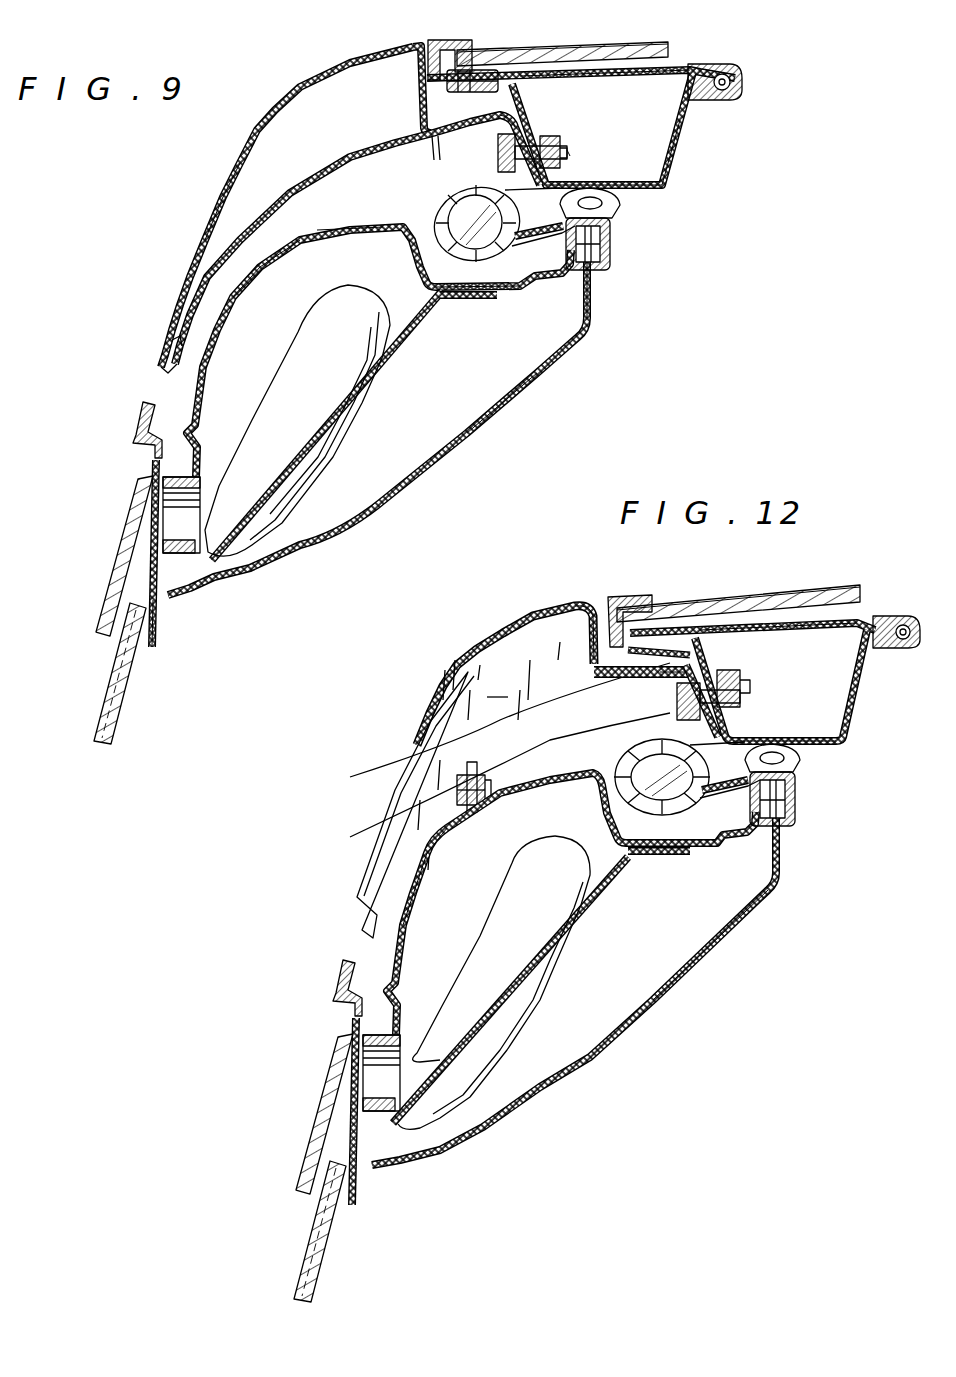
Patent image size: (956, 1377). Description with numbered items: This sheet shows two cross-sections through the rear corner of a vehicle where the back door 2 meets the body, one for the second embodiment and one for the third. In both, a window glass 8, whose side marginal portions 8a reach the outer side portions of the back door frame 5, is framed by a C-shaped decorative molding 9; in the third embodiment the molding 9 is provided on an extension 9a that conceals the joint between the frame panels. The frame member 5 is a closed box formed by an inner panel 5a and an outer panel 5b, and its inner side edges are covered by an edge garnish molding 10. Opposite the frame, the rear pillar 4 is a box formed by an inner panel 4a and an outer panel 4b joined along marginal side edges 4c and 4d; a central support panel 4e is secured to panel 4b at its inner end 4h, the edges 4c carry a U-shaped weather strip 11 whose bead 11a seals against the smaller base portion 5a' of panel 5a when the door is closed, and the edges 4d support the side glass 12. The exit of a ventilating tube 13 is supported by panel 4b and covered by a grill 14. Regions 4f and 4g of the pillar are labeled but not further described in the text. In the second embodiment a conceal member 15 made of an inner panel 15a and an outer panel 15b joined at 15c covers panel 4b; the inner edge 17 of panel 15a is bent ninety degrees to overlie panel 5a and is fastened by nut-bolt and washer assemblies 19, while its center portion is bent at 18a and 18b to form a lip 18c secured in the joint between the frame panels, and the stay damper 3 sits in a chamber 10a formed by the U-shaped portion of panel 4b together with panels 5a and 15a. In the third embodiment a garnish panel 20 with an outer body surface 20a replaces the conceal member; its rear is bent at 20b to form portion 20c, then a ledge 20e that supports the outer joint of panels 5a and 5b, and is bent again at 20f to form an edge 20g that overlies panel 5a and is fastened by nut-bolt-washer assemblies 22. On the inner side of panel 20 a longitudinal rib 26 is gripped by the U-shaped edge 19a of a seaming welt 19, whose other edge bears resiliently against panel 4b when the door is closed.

In FIG. 9, the back door 2 is at (570, 48).
In FIG. 12, the back door 2 is at (683, 598).
In FIG. 9, the stay damper 3 is at (435, 213).
In FIG. 12, the stay damper 3 is at (690, 800).
In FIG. 9, the rear pillar 4 is at (539, 382).
In FIG. 12, the rear pillar 4 is at (645, 1043).
In FIG. 9, the inner panel 4a is at (470, 440).
In FIG. 12, the inner panel 4a is at (768, 908).
In FIG. 9, the outer panel 4b is at (276, 275).
In FIG. 12, the outer panel 4b is at (430, 850).
In FIG. 9, the inner marginal side edges 4c is at (592, 290).
In FIG. 9, the outer marginal side edges 4d is at (160, 627).
In FIG. 9, the central strut or support panel 4e is at (370, 362).
In FIG. 9, the housing top plate 4f is at (425, 286).
In FIG. 9, the housing upper wall 4g is at (395, 245).
In FIG. 9, the rear or inner end 4h is at (470, 301).
In FIG. 9, the back door frame 5 is at (685, 140).
In FIG. 12, the back door frame 5 is at (857, 710).
In FIG. 9, the inner panel 5a is at (613, 207).
In FIG. 12, the inner panel 5a is at (813, 753).
In FIG. 9, the smaller base portion 5a' is at (652, 152).
In FIG. 9, the outer panel 5b is at (645, 80).
In FIG. 12, the outer panel 5b is at (812, 622).
In FIG. 9, the window glass 8 is at (645, 45).
In FIG. 12, the window glass 8 is at (738, 592).
In FIG. 9, the side marginal portions 8a is at (498, 50).
In FIG. 9, the decorative molding 9 is at (428, 44).
In FIG. 12, the decorative molding 9 is at (613, 598).
In FIG. 12, the extension 9a is at (612, 657).
In FIG. 9, the edge garnish molding 10 is at (745, 90).
In FIG. 12, the edge garnish molding 10 is at (910, 615).
In FIG. 9, the chamber 10a is at (502, 278).
In FIG. 9, the weather strip 11 is at (610, 262).
In FIG. 12, the weather strip 11 is at (798, 818).
In FIG. 9, the bead 11a is at (612, 210).
In FIG. 9, the side glass 12 is at (130, 662).
In FIG. 12, the side glass 12 is at (330, 1280).
In FIG. 9, the tube 13 is at (300, 470).
In FIG. 12, the tube 13 is at (398, 1040).
In FIG. 9, the grill 14 is at (138, 480).
In FIG. 12, the grill 14 is at (338, 1038).
In FIG. 9, the conceal member 15 is at (253, 105).
In FIG. 9, the inner panel 15a is at (345, 165).
In FIG. 9, the outer panel 15b is at (228, 187).
In FIG. 9, the connection 15c is at (157, 368).
In FIG. 9, the rear or inner edge 17 is at (497, 150).
In FIG. 12, the rear or inner edge 17 is at (499, 685).
In FIG. 9, the bend 18a is at (414, 129).
In FIG. 9, the bend 18b is at (434, 138).
In FIG. 9, the lip 18c is at (508, 123).
In FIG. 9, the nut-bolt and washer assemblies / seaming welt 19 is at (568, 152).
In FIG. 12, the nut-bolt and washer assemblies / seaming welt 19 is at (458, 790).
In FIG. 12, the edge 19a is at (490, 790).
In FIG. 12, the garnish panel 20 is at (470, 630).
In FIG. 12, the outer surface 20a is at (425, 725).
In FIG. 12, the bend 20b is at (575, 606).
In FIG. 12, the portion 20c is at (596, 672).
In FIG. 12, the lip or ledge portion 20e is at (645, 690).
In FIG. 12, the bend 20f is at (680, 682).
In FIG. 12, the margin or edge 20g is at (710, 678).
In FIG. 12, the nut-bolt-washer assemblies 22 is at (742, 700).
In FIG. 12, the longitudinal rib 26 is at (477, 765).